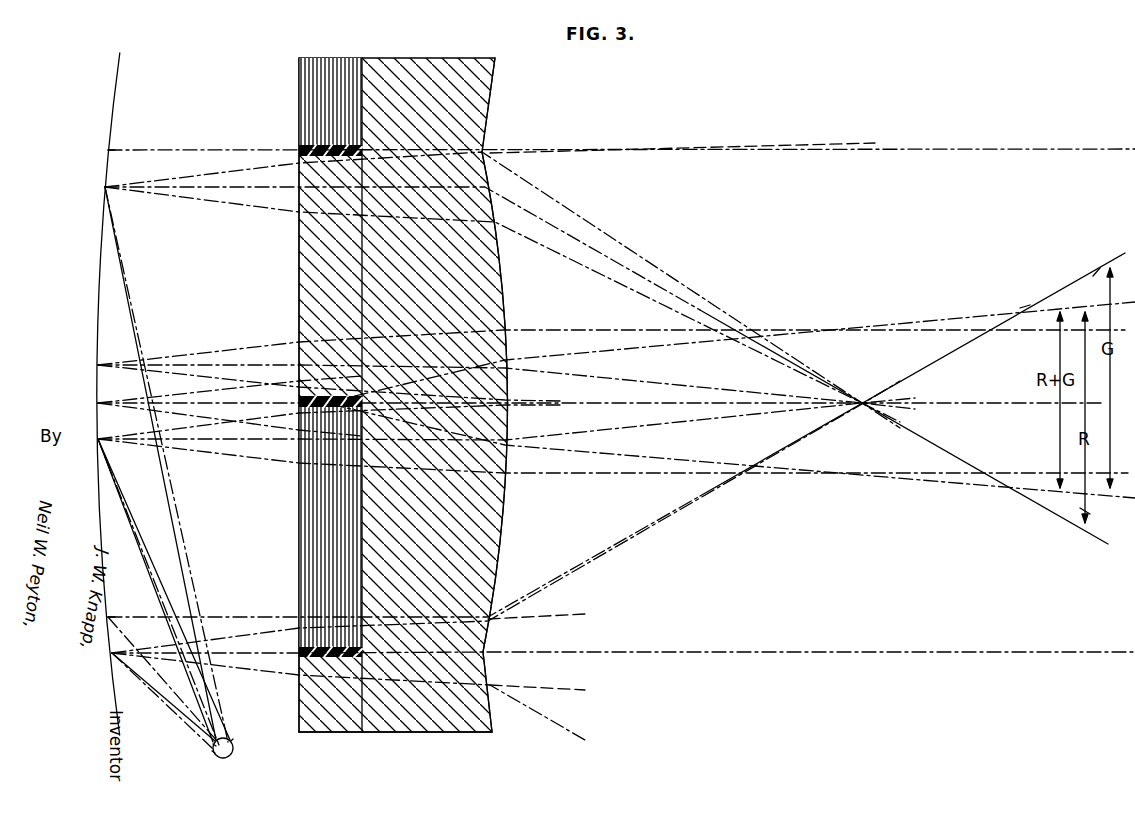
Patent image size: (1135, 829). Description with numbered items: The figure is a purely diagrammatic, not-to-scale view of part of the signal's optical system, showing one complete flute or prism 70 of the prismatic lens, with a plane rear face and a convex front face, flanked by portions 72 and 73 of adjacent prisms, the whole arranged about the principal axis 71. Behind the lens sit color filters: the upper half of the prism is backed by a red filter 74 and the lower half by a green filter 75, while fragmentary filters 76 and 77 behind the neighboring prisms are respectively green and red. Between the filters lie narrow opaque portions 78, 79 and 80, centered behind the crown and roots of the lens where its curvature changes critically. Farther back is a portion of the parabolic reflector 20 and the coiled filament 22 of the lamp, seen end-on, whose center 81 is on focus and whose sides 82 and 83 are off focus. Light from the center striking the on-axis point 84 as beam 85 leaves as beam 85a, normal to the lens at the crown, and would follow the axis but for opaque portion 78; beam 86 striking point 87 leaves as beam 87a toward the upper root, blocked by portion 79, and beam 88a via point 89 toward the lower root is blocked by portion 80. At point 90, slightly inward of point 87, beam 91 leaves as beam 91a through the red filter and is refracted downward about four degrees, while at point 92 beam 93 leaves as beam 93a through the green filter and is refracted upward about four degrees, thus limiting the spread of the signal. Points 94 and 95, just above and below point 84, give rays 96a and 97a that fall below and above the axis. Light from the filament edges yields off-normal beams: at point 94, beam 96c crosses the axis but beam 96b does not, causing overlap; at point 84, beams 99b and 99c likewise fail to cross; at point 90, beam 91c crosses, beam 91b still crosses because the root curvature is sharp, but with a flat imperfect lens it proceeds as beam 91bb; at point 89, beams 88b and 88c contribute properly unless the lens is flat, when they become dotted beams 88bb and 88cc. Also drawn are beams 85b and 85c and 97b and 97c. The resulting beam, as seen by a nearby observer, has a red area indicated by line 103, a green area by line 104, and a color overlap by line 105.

The parabolic reflector 20 is at (97, 302).
The filament 22 is at (224, 758).
The prism 70 is at (499, 546).
The principal axis 71 is at (771, 406).
The adjacent prism portion 72 is at (488, 92).
The adjacent prism portion 73 is at (499, 726).
The red filter 74 is at (299, 258).
The green filter 75 is at (299, 521).
The green filter portion 76 is at (299, 95).
The red filter portion 77 is at (318, 735).
The opaque portion 78 is at (300, 404).
The opaque portion 79 is at (299, 149).
The opaque portion 80 is at (300, 656).
The filament center 81 is at (213, 745).
The filament side 82 is at (213, 752).
The filament side 83 is at (232, 741).
The reflector point 84 is at (97, 403).
The beam 85 is at (97, 437).
The beam 85a is at (216, 402).
The upper ray from slit 85b is at (732, 352).
The lower ray from slit 85c is at (732, 451).
The beam 86 is at (128, 236).
The reflector point 87 is at (120, 138).
The beam 87a is at (167, 148).
The beam 88a is at (147, 688).
The beam 88b is at (222, 638).
The dotted beam 88bb is at (590, 617).
The beam 88c is at (240, 668).
The dotted beam 88cc is at (598, 684).
The reflector point 89 is at (113, 656).
The reflector point 90 is at (107, 187).
The beam 91 is at (124, 260).
The beam 91a is at (252, 187).
The beam 91b is at (175, 182).
The beam 91bb is at (767, 148).
The beam 91c is at (212, 203).
The reflector point 92 is at (120, 605).
The beam 93 is at (122, 632).
The beam 93a is at (282, 617).
The reflector point 94 is at (111, 353).
The reflector point 95 is at (124, 452).
The ray 96a is at (263, 365).
The beam 96b is at (238, 343).
The beam 96c is at (173, 374).
The ray 97a is at (236, 441).
The reflected ray 97b is at (518, 406).
The reflected ray 97c is at (613, 456).
The off-normal beam 99b is at (143, 396).
The off-normal beam 99c is at (140, 412).
The red area line 103 is at (1082, 511).
The green area line 104 is at (1093, 278).
The color overlap line 105 is at (1024, 308).